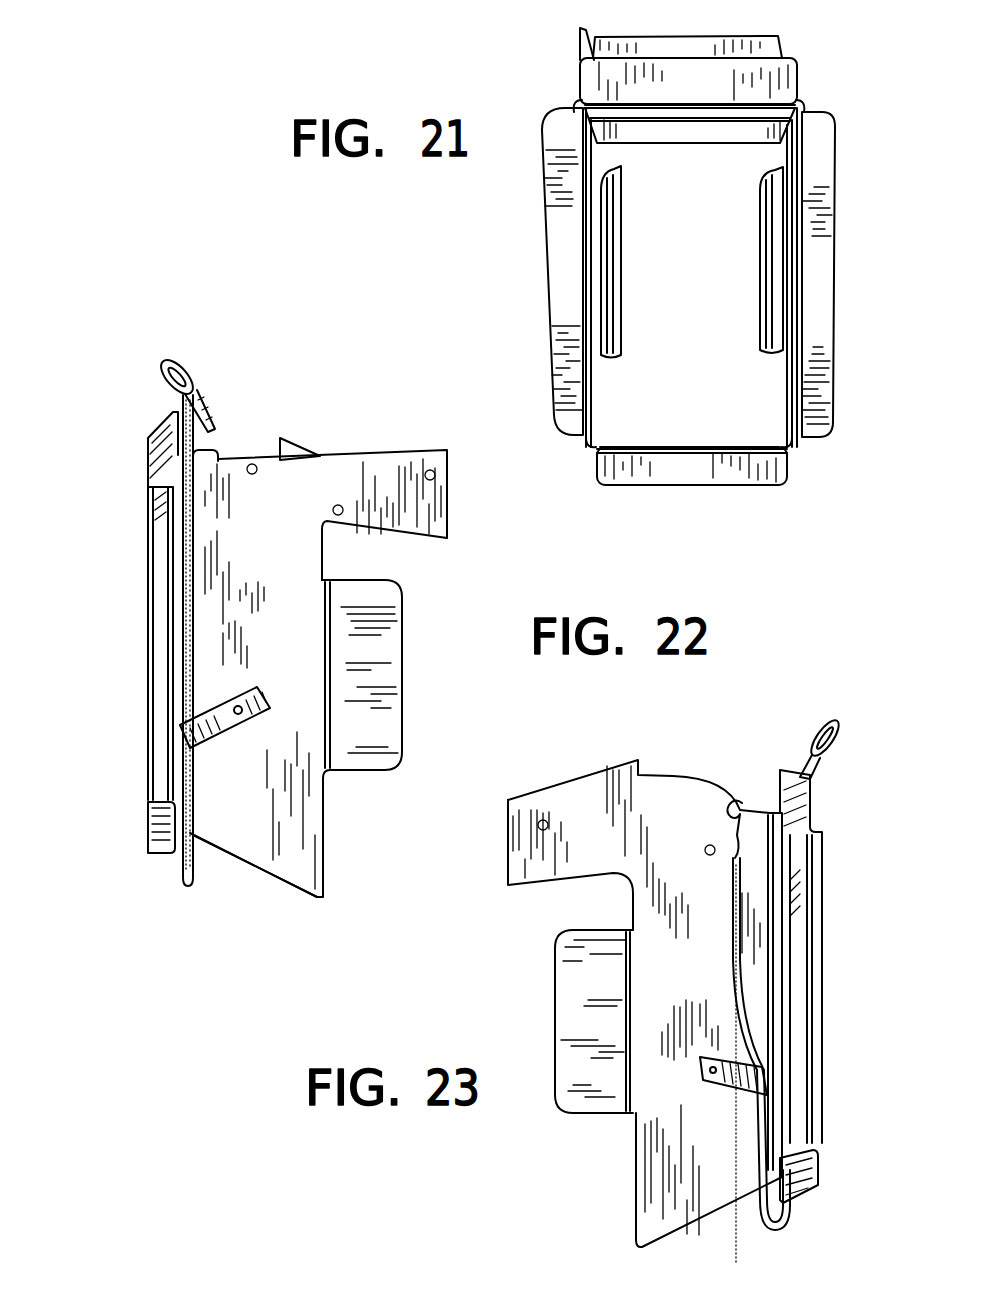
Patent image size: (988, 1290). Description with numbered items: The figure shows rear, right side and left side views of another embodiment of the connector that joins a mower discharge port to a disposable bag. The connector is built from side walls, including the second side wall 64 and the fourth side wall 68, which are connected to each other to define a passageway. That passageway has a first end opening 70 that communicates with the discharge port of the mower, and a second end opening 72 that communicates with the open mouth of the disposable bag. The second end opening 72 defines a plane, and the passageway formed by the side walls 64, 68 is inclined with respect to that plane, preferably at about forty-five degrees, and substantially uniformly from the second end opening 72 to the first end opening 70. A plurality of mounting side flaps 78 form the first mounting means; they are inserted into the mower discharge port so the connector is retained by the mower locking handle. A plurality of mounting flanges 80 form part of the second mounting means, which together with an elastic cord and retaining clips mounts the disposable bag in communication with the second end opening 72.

In FIG. 22, the second side wall 64 is at (297, 818).
In FIG. 23, the fourth side wall 68 is at (653, 1182).
In FIG. 22, the first end opening 70 is at (425, 580).
In FIG. 23, the first end opening 70 is at (603, 1140).
In FIG. 21, the second end opening 72 is at (747, 430).
In FIG. 22, the second end opening 72 is at (160, 632).
In FIG. 23, the second end opening 72 is at (802, 970).
In FIG. 22, the mounting side flaps 78 is at (393, 682).
In FIG. 23, the mounting side flaps 78 is at (577, 1002).
In FIG. 21, the mounting flanges 80 is at (790, 72).